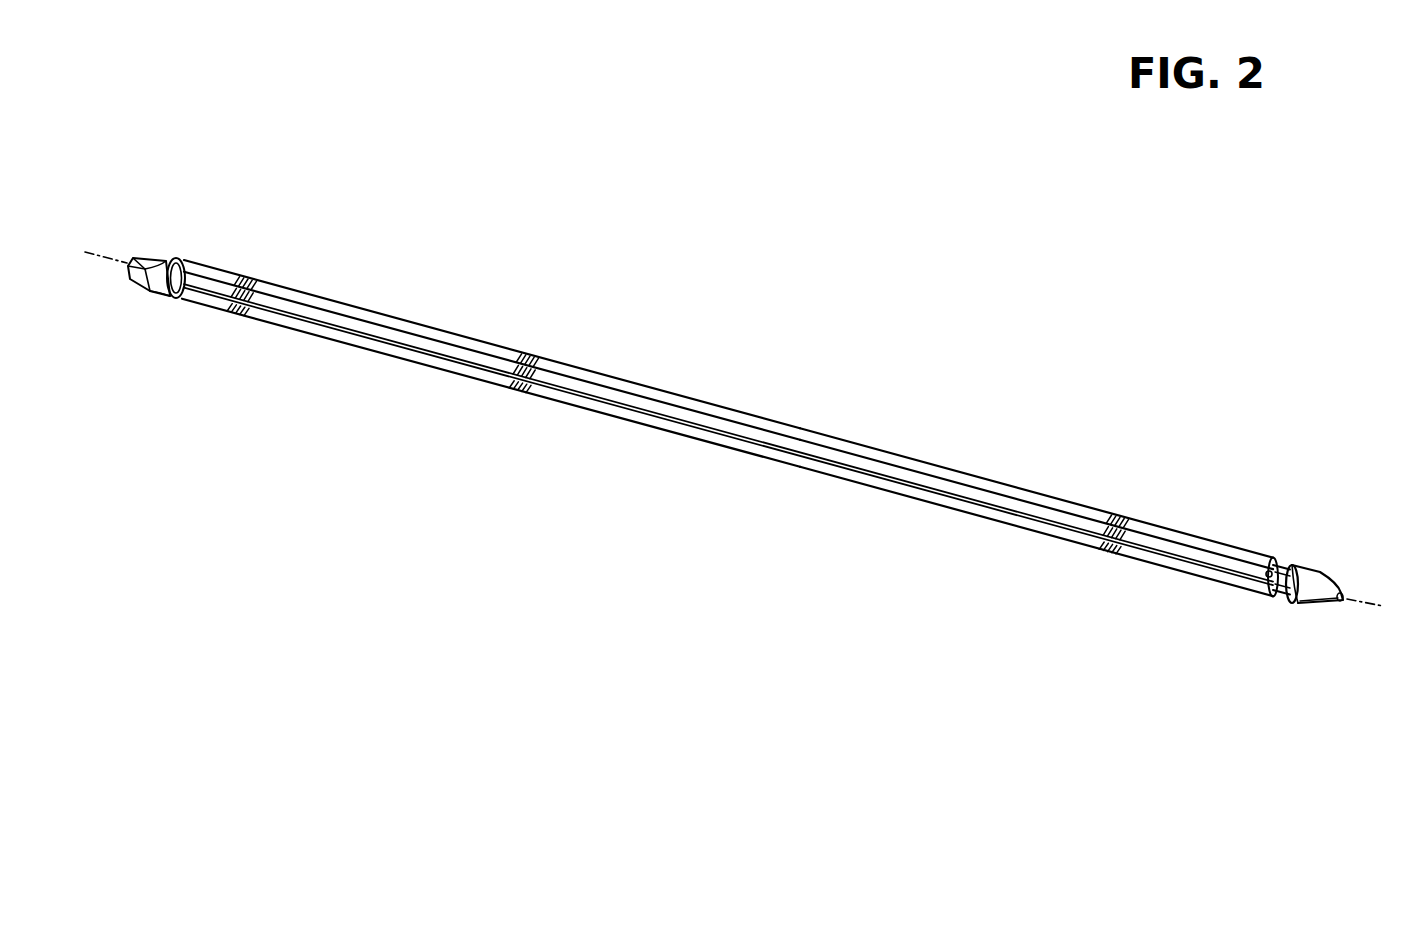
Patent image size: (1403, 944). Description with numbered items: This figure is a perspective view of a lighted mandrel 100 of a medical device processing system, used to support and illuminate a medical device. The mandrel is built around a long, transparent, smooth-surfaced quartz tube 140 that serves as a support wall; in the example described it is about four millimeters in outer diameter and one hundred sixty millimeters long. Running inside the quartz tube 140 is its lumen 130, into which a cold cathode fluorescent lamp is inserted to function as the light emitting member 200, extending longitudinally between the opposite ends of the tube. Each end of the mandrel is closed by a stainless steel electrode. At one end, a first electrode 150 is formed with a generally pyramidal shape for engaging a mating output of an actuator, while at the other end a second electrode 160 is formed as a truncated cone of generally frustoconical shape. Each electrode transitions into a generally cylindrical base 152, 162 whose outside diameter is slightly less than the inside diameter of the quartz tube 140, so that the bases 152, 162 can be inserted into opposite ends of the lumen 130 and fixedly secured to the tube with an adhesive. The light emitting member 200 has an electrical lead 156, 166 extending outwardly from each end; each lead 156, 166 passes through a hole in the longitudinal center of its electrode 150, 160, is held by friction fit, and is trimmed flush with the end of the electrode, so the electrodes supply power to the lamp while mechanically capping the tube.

The lighted mandrel 100 is at (714, 272).
The lumen 130 is at (446, 332).
The quartz tube 140 is at (1090, 509).
The first electrode 150 is at (168, 258).
The cylindrical base 152 is at (185, 277).
The electrical lead 156 is at (104, 258).
The second electrode 160 is at (1318, 568).
The cylindrical base 162 is at (1280, 578).
The electrical lead 166 is at (1370, 602).
The light emitting member 200 is at (932, 488).